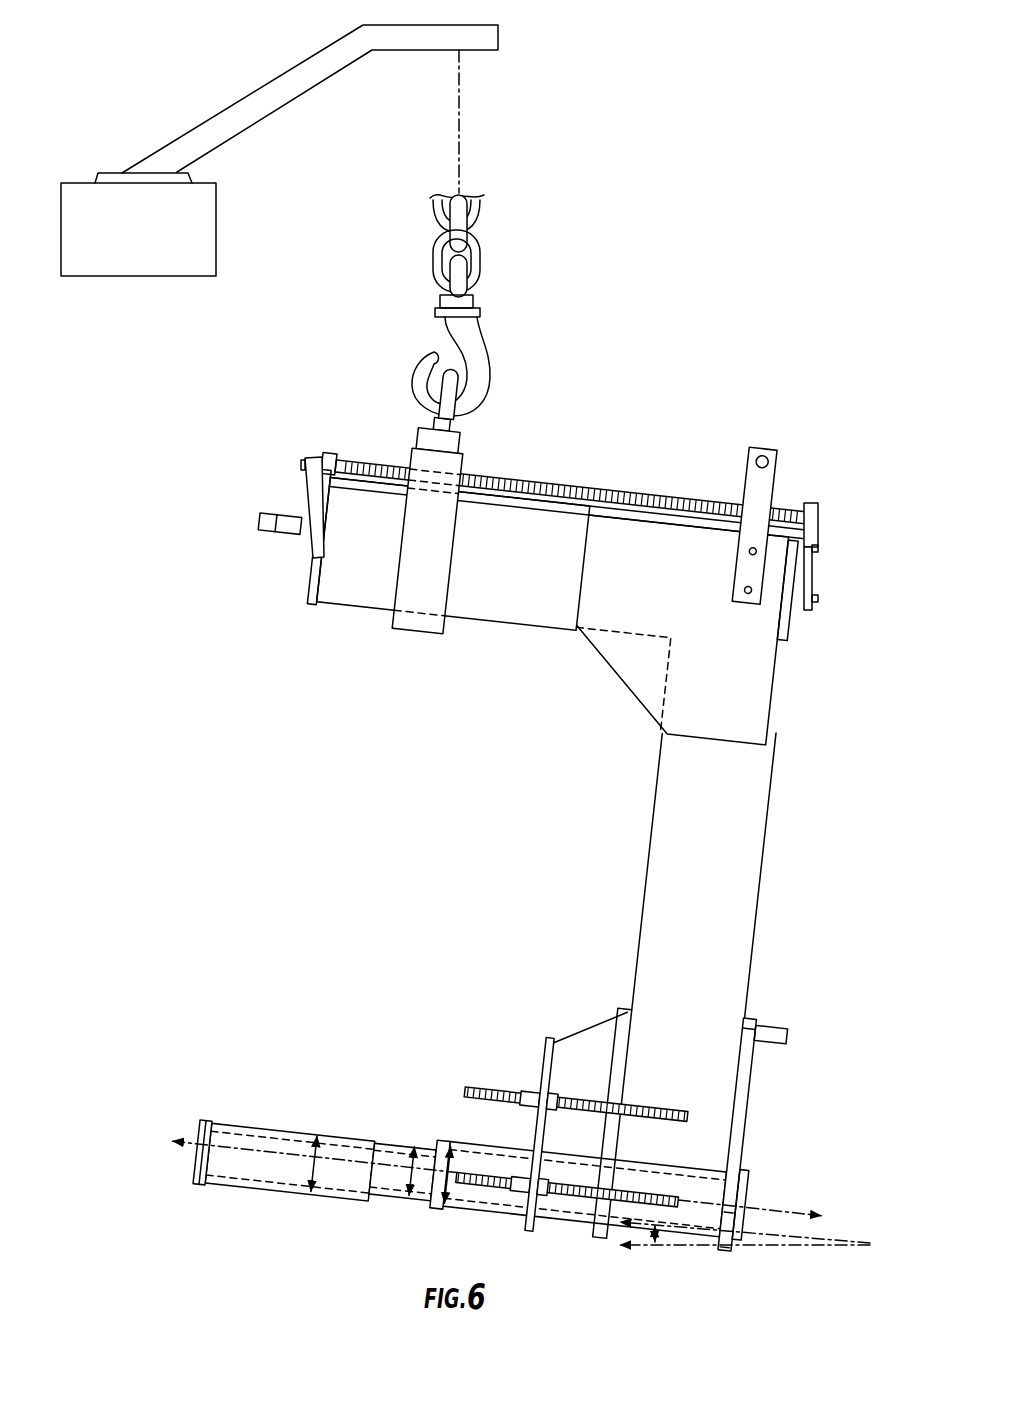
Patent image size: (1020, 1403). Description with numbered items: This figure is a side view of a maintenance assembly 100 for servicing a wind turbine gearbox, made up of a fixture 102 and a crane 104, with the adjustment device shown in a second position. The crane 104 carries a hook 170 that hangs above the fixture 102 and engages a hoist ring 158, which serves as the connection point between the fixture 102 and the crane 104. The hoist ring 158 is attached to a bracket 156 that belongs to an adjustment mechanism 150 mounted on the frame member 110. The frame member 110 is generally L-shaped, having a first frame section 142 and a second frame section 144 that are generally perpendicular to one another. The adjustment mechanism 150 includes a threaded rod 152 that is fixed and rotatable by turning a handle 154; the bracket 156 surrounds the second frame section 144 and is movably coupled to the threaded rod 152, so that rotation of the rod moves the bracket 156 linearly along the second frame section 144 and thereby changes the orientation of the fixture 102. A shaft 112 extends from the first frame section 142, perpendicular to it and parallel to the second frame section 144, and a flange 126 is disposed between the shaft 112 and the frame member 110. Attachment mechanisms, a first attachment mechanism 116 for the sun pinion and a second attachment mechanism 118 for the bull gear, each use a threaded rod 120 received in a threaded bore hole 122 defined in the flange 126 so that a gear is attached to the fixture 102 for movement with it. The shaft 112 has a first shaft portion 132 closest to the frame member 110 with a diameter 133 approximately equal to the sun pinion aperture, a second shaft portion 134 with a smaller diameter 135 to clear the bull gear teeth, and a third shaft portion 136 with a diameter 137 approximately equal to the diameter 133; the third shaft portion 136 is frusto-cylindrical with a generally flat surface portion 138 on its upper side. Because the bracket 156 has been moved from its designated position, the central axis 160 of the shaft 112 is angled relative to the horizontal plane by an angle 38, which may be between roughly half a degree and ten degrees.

The maintenance assembly 100 is at (111, 82).
The crane 104 is at (185, 110).
The fixture 102 is at (633, 296).
The hook 170 is at (478, 354).
The hoist ring 158 is at (440, 398).
The adjustment mechanism 150 is at (534, 540).
The handle 154 is at (305, 498).
The second frame section 144 is at (540, 547).
The threaded rod 152 is at (650, 492).
The bracket 156 is at (422, 548).
The frame member 110 is at (755, 734).
The first frame section 142 is at (716, 882).
The flange 126 is at (547, 1054).
The second attachment mechanism 118 is at (588, 1087).
The threaded rod 120 is at (497, 1085).
The threaded bore hole 122 is at (541, 1112).
The shaft 112 is at (468, 1152).
The first attachment mechanism 116 is at (578, 1201).
The third shaft portion 136 is at (322, 1200).
The generally flat surface portion 138 is at (225, 1120).
The second shaft portion 134 is at (405, 1200).
The first shaft portion 132 is at (487, 1215).
The diameter 137 is at (310, 1135).
The diameter 135 is at (410, 1150).
The diameter 133 is at (448, 1142).
The central axis 160 is at (185, 1157).
The angle 38 is at (654, 1232).